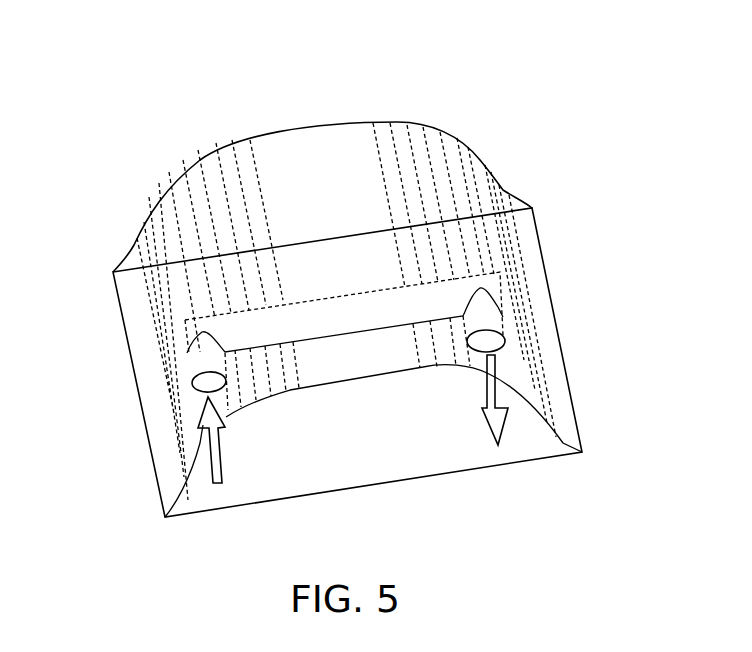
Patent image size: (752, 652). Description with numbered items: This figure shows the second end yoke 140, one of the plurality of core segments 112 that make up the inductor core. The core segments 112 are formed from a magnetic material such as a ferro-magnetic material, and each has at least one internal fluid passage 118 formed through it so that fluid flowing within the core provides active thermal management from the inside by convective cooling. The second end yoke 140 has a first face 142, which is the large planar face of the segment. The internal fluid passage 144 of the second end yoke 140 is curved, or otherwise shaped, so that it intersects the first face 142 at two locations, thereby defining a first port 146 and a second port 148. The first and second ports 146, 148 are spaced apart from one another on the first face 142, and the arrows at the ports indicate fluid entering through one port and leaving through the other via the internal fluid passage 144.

The second end yoke 140 is at (553, 87).
The core segment 112 is at (477, 155).
The first face 142 is at (137, 304).
The internal fluid passage 118 is at (485, 323).
The internal fluid passage 144 is at (345, 349).
The first port 146 is at (210, 385).
The second port 148 is at (488, 342).